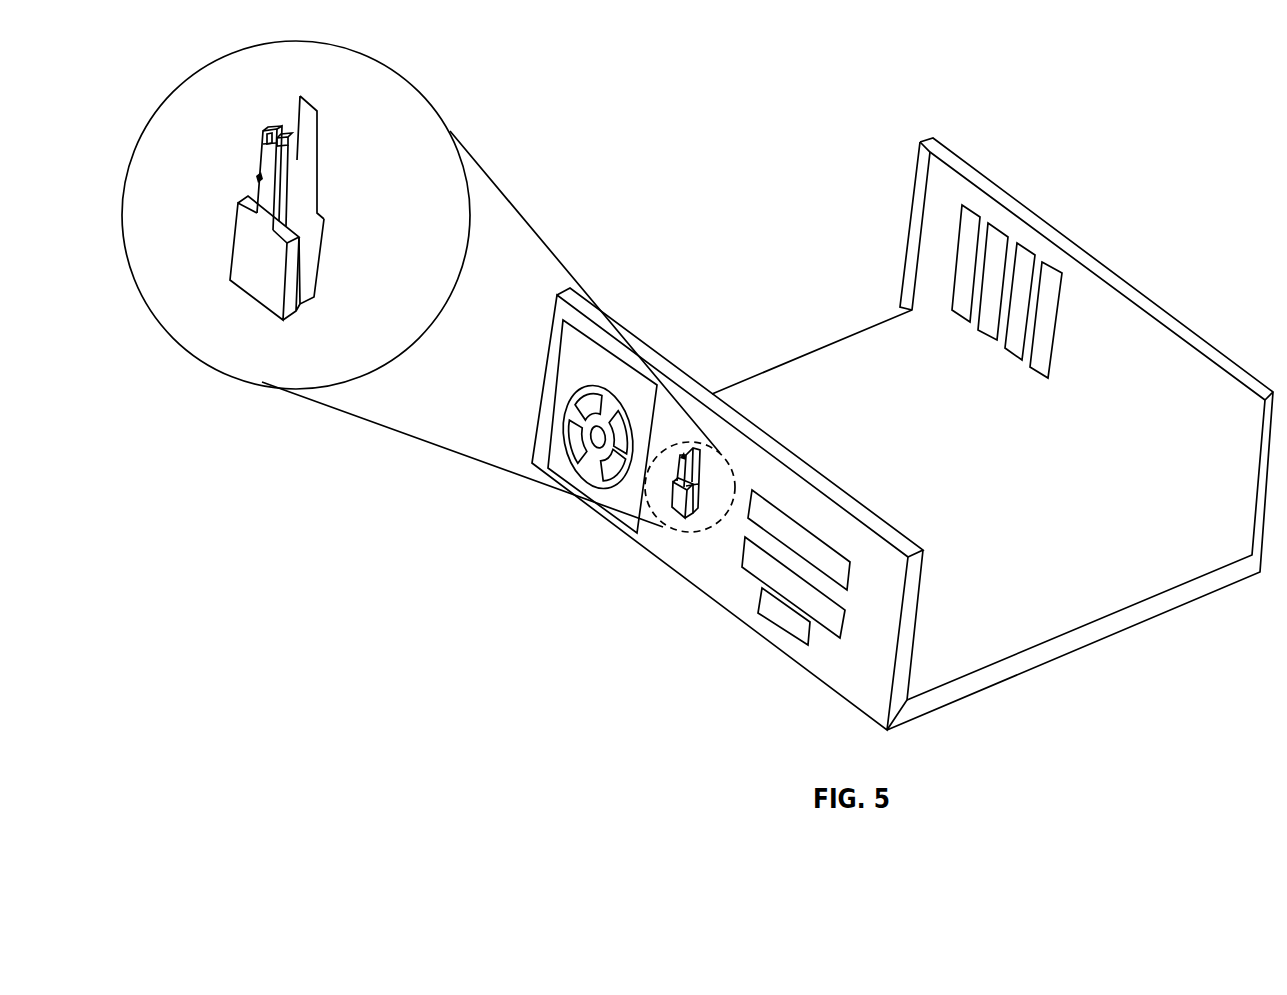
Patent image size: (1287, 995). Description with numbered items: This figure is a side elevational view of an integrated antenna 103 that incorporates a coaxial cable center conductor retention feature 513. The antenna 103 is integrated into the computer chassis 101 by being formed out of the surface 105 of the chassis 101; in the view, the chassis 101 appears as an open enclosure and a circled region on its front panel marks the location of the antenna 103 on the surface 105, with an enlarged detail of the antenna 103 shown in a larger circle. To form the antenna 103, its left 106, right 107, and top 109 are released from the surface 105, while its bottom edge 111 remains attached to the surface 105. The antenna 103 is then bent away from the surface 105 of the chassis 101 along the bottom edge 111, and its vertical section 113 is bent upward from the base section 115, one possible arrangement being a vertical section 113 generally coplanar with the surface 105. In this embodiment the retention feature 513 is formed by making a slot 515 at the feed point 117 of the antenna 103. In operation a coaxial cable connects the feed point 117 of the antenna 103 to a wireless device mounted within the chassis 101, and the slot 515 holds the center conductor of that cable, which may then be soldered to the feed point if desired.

The chassis 101 is at (1181, 636).
The antenna 103 is at (274, 211).
The surface 105 is at (693, 535).
The left 106 is at (267, 162).
The right 107 is at (282, 197).
The top 109 is at (270, 140).
The bottom edge 111 is at (310, 300).
The vertical section 113 is at (253, 257).
The base section 115 is at (303, 303).
The feed point 117 is at (290, 140).
The center conductor retention feature 513 is at (258, 179).
The slot 515 is at (267, 132).